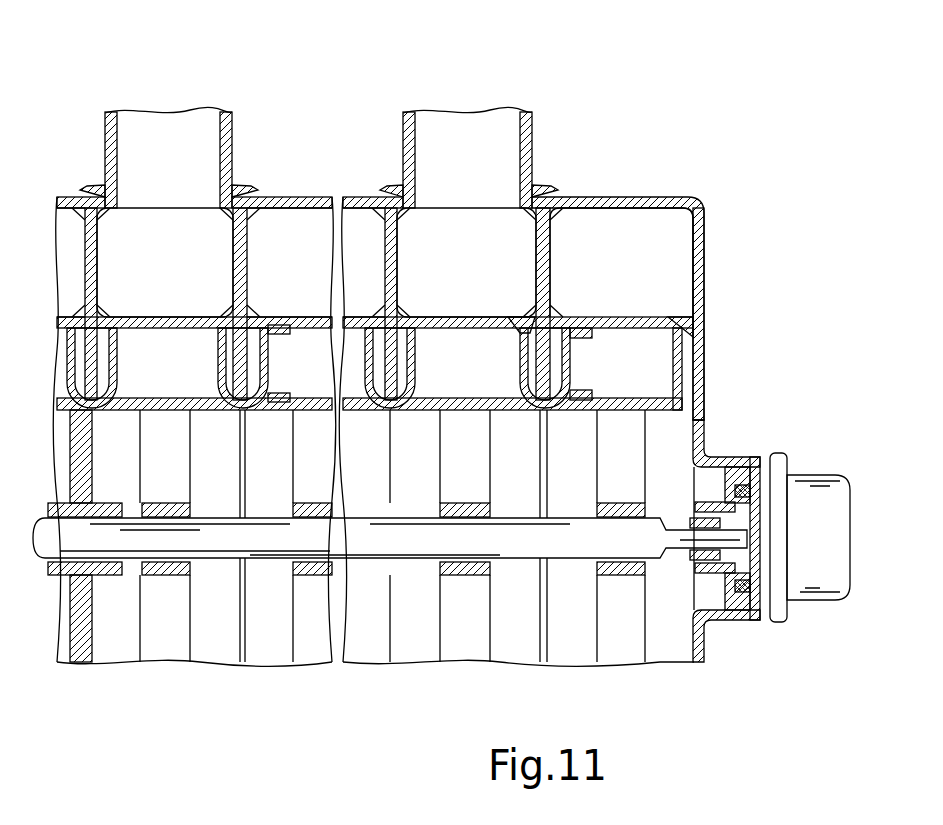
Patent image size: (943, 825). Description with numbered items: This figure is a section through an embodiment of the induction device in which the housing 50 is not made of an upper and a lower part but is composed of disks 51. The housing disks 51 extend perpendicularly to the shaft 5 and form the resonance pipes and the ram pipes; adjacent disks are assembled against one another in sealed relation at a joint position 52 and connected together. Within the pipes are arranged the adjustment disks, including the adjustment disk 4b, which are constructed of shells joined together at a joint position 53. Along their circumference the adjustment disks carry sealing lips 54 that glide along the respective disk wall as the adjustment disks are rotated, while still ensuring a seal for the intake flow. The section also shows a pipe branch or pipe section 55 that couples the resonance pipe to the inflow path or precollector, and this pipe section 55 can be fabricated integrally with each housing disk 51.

The housing 50 is at (716, 210).
The housing disk 51 is at (85, 200).
The joint position 52 is at (545, 197).
The joint position 53 is at (586, 402).
The sealing lip 54 is at (555, 318).
The pipe section 55 is at (403, 145).
The adjustment disk 4b is at (675, 360).
The shaft 5 is at (514, 540).